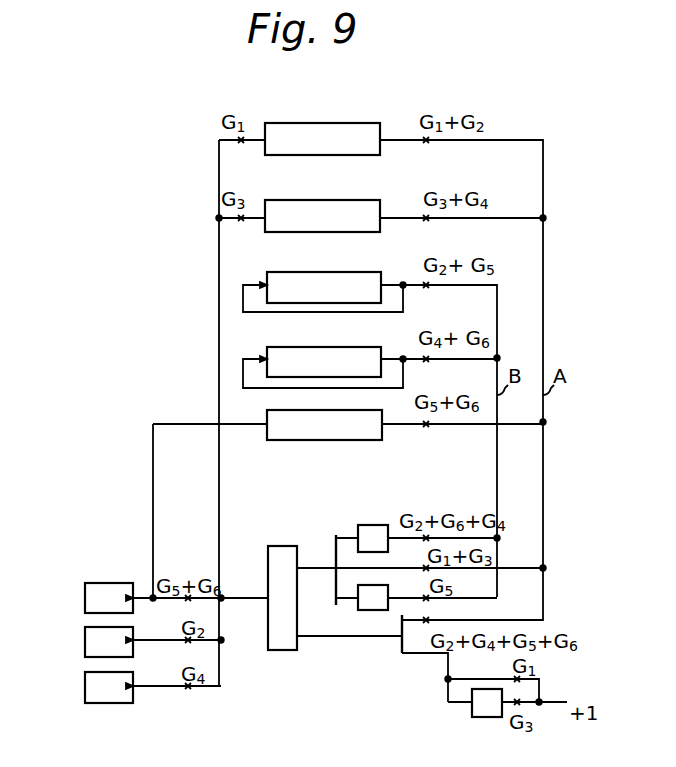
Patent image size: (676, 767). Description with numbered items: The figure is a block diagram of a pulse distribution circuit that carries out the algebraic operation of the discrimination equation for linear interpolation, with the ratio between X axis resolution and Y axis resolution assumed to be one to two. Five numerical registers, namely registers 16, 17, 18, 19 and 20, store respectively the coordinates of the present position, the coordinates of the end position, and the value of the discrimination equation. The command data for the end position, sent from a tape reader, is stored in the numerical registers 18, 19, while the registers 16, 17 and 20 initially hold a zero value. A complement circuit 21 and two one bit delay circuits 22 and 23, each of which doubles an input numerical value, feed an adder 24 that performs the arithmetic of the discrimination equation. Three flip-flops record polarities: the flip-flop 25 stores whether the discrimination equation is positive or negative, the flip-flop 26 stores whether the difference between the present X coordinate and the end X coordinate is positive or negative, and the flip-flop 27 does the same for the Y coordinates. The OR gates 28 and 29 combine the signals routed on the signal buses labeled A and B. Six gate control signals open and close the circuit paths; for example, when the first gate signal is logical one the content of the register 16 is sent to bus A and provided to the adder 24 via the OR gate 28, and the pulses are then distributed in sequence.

The numerical register R1 16 is at (289, 123).
The numerical register R2 17 is at (289, 200).
The numerical register R3 18 is at (295, 268).
The numerical register R4 19 is at (295, 343).
The numerical register R5 20 is at (267, 410).
The complement circuit 21 is at (373, 525).
The one bit delay circuit 22 is at (362, 610).
The one bit delay circuit 23 is at (472, 712).
The adder 24 is at (282, 546).
The flip-flop 25 is at (85, 600).
The flip-flop 26 is at (85, 644).
The flip-flop 27 is at (85, 690).
The OR gate 28 is at (336, 540).
The OR gate 29 is at (398, 660).